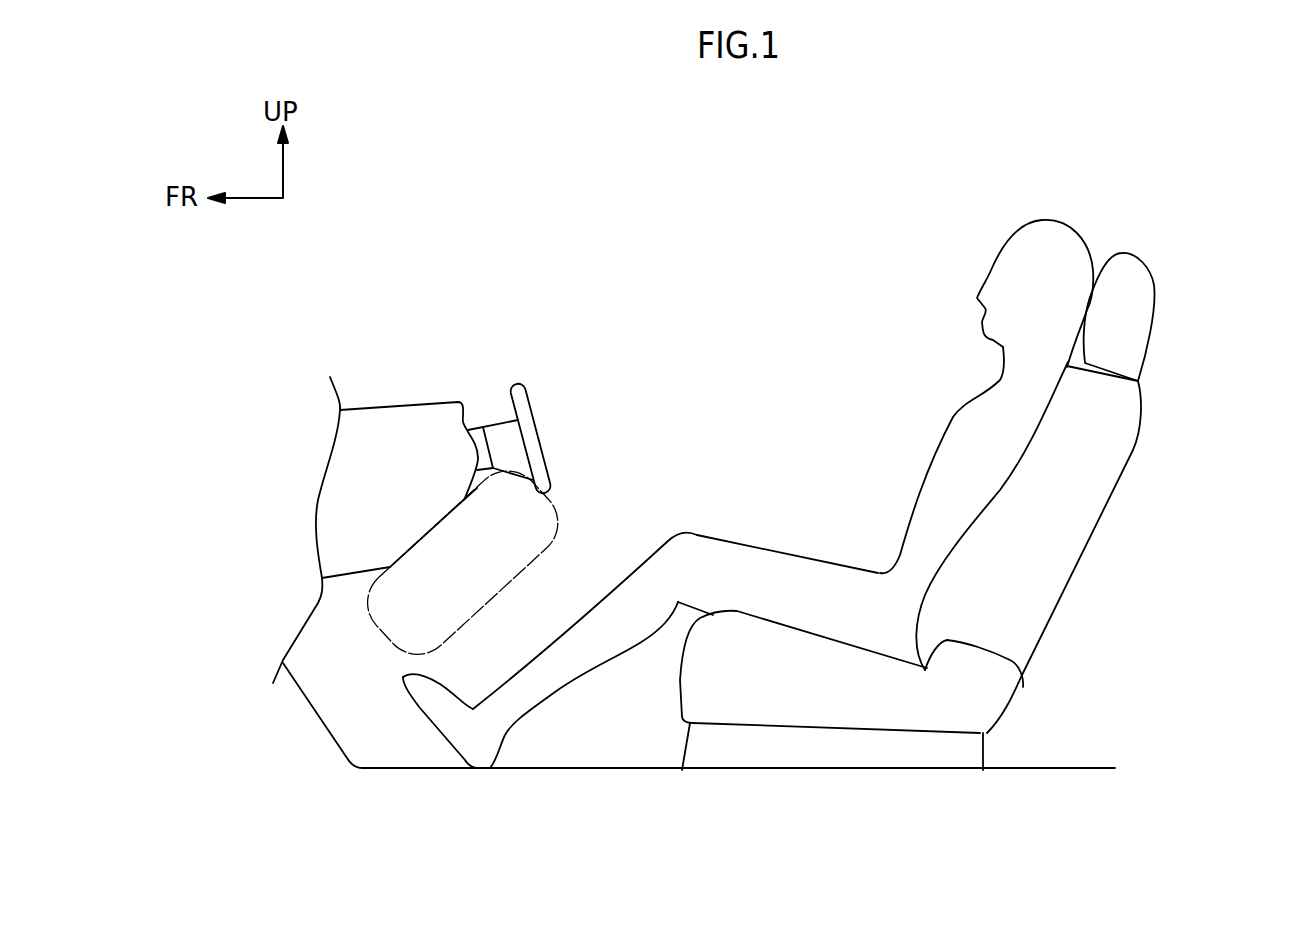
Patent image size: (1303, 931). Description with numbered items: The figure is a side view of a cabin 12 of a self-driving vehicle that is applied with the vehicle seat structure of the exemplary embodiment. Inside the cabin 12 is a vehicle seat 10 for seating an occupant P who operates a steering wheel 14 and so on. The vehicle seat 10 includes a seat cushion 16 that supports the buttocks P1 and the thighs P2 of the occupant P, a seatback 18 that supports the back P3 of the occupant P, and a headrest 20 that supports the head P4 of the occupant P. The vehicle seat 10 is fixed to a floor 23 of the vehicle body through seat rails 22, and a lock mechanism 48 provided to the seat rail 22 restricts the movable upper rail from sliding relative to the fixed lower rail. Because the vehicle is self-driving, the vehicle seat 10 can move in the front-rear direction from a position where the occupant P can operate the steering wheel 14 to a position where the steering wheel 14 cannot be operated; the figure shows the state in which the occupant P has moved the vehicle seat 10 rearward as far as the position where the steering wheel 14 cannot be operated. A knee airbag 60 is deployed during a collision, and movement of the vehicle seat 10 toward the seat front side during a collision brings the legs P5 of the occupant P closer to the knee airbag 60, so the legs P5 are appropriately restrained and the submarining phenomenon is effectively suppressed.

The vehicle seat 10 is at (925, 483).
The cabin 12 is at (743, 232).
The steering wheel 14 is at (518, 380).
The seat cushion 16 is at (830, 663).
The seatback 18 is at (1043, 568).
The headrest 20 is at (1127, 318).
The seat rail 22 is at (692, 748).
The floor 23 is at (540, 768).
The lock mechanism 48 is at (840, 745).
The knee airbag 60 is at (540, 518).
The occupant P is at (797, 427).
The buttocks P1 is at (907, 625).
The thighs P2 is at (765, 573).
The back P3 is at (1000, 463).
The head P4 is at (1022, 240).
The legs P5 is at (648, 537).